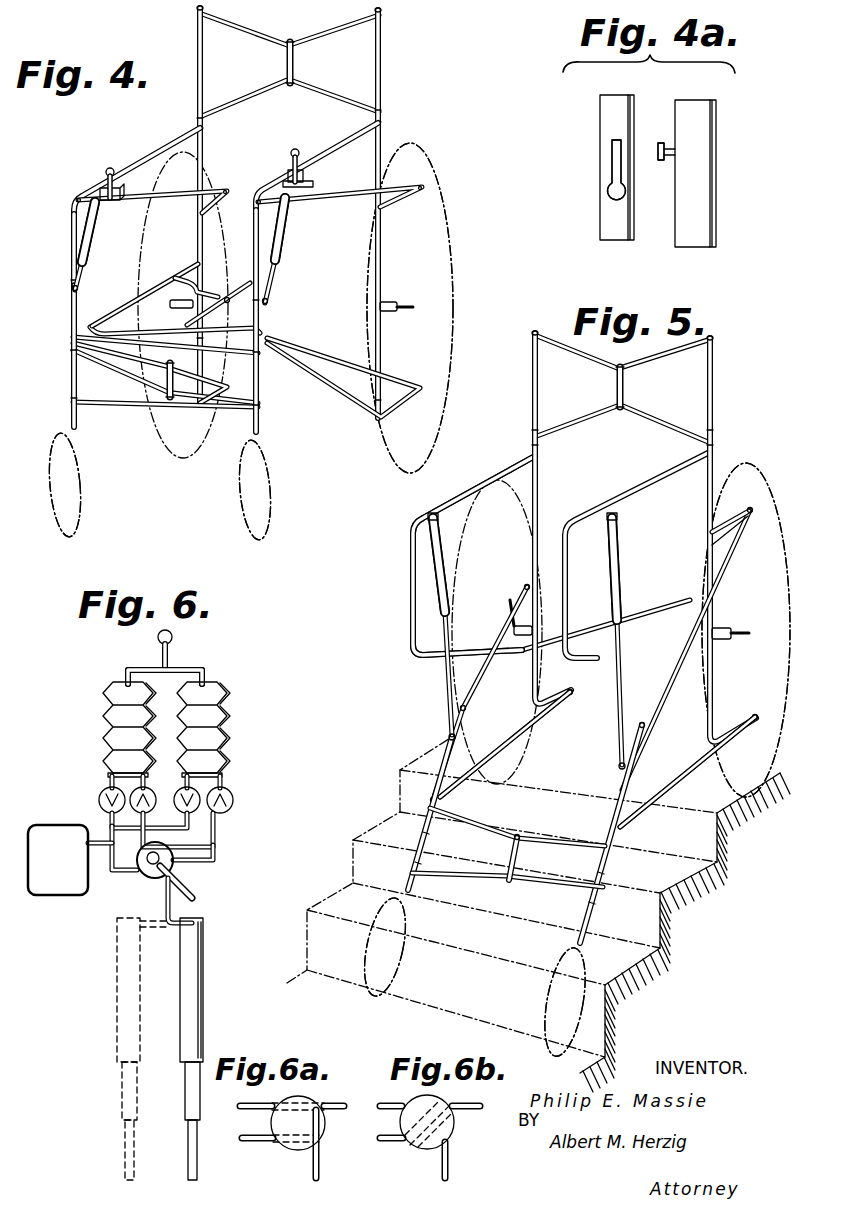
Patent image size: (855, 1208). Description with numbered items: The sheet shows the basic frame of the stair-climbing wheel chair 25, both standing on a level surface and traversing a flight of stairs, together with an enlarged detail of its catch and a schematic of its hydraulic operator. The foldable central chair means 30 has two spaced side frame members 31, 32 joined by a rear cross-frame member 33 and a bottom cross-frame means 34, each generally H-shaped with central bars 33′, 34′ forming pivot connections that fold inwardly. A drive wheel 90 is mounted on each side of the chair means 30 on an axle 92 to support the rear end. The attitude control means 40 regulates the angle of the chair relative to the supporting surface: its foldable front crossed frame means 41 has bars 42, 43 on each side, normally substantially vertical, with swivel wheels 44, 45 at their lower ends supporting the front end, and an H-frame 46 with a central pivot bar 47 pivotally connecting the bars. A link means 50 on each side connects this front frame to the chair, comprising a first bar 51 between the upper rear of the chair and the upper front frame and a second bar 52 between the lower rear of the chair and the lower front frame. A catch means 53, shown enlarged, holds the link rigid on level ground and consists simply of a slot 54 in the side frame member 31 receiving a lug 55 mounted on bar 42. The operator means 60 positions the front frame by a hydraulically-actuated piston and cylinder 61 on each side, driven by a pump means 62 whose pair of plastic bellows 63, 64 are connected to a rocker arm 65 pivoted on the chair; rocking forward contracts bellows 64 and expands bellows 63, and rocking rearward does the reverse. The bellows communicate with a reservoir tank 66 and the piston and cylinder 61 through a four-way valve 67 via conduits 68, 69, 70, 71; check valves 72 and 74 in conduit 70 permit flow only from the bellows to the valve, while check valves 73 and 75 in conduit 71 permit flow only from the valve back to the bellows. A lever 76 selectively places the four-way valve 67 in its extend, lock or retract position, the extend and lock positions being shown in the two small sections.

In FIG. 4, the stair-climbing wheel chair 25 is at (196, 46).
In FIG. 5, the stair-climbing wheel chair 25 is at (511, 428).
In FIG. 4, the chair means 30 is at (386, 82).
In FIG. 5, the chair means 30 is at (725, 396).
In FIG. 4, the side frame member 31 is at (328, 153).
In FIG. 4A, the side frame member 31 is at (599, 113).
In FIG. 5, the side frame member 31 is at (667, 480).
In FIG. 4, the side frame member 32 is at (168, 153).
In FIG. 5, the side frame member 32 is at (447, 508).
In FIG. 4, the rear cross-frame member 33 is at (322, 37).
In FIG. 5, the rear cross-frame member 33 is at (660, 368).
In FIG. 4, the central bar 33′ is at (297, 62).
In FIG. 5, the central bar 33′ is at (626, 391).
In FIG. 4, the bottom cross-frame means 34 is at (143, 331).
In FIG. 5, the bottom cross-frame means 34 is at (462, 672).
In FIG. 4, the central bar 34′ is at (232, 296).
In FIG. 5, the central bar 34′ is at (545, 621).
In FIG. 4, the attitude control means 40 is at (446, 169).
In FIG. 5, the attitude control means 40 is at (745, 446).
In FIG. 4, the front crossed frame means 41 is at (212, 441).
In FIG. 5, the front crossed frame means 41 is at (523, 921).
In FIG. 4, the bar 42 is at (266, 392).
In FIG. 4A, the bar 42 is at (714, 219).
In FIG. 5, the bar 42 is at (608, 872).
In FIG. 4, the bar 43 is at (70, 382).
In FIG. 5, the bar 43 is at (421, 836).
In FIG. 4, the swivel wheel 44 is at (271, 491).
In FIG. 5, the swivel wheel 44 is at (547, 1004).
In FIG. 4, the swivel wheel 45 is at (82, 498).
In FIG. 5, the swivel wheel 45 is at (405, 926).
In FIG. 4, the H-frame 46 is at (103, 405).
In FIG. 5, the H-frame 46 is at (581, 844).
In FIG. 4, the central pivot bar 47 is at (167, 405).
In FIG. 5, the central pivot bar 47 is at (517, 835).
In FIG. 4, the link means 50 is at (57, 335).
In FIG. 5, the link means 50 is at (539, 746).
In FIG. 4, the first bar 51 is at (162, 206).
In FIG. 5, the first bar 51 is at (731, 572).
In FIG. 4, the second bar 52 is at (218, 386).
In FIG. 5, the second bar 52 is at (454, 789).
In FIG. 4A, the catch means 53 is at (666, 109).
In FIG. 4A, the slot 54 is at (612, 160).
In FIG. 4A, the lug 55 is at (668, 150).
In FIG. 4, the operator means 60 is at (115, 165).
In FIG. 5, the operator means 60 is at (583, 501).
In FIG. 6, the operator means 60 is at (283, 758).
In FIG. 4, the piston and cylinder 61 is at (90, 256).
In FIG. 5, the piston and cylinder 61 is at (437, 548).
In FIG. 6, the piston and cylinder 61 is at (118, 995).
In FIG. 4, the pump means 62 is at (128, 141).
In FIG. 5, the pump means 62 is at (421, 518).
In FIG. 6, the pump means 62 is at (124, 672).
In FIG. 6, the plastic bellows 63 is at (228, 704).
In FIG. 6, the plastic bellows 64 is at (108, 707).
In FIG. 4, the rocker arm 65 is at (102, 176).
In FIG. 6, the rocker arm 65 is at (186, 665).
In FIG. 6, the reservoir tank 66 is at (40, 894).
In FIG. 6, the four-way valve 67 is at (148, 921).
In FIG. 6, the conduit 68 is at (98, 846).
In FIG. 6A, the conduit 68 is at (246, 1112).
In FIG. 6B, the conduit 68 is at (383, 1108).
In FIG. 6, the conduit 69 is at (163, 908).
In FIG. 6A, the conduit 69 is at (322, 1166).
In FIG. 6B, the conduit 69 is at (451, 1166).
In FIG. 6, the conduit 70 is at (108, 829).
In FIG. 6A, the conduit 70 is at (257, 1143).
In FIG. 6B, the conduit 70 is at (388, 1143).
In FIG. 6, the conduit 71 is at (221, 859).
In FIG. 6A, the conduit 71 is at (336, 1111).
In FIG. 6B, the conduit 71 is at (478, 1111).
In FIG. 6, the check valve 72 is at (101, 792).
In FIG. 6, the check valve 73 is at (134, 791).
In FIG. 6, the check valve 74 is at (181, 790).
In FIG. 6, the check valve 75 is at (234, 800).
In FIG. 4, the lever 76 is at (314, 185).
In FIG. 6, the lever 76 is at (194, 894).
In FIG. 4, the drive wheel 90 is at (200, 141).
In FIG. 5, the drive wheel 90 is at (765, 493).
In FIG. 4, the axle 92 is at (176, 283).
In FIG. 5, the axle 92 is at (509, 612).